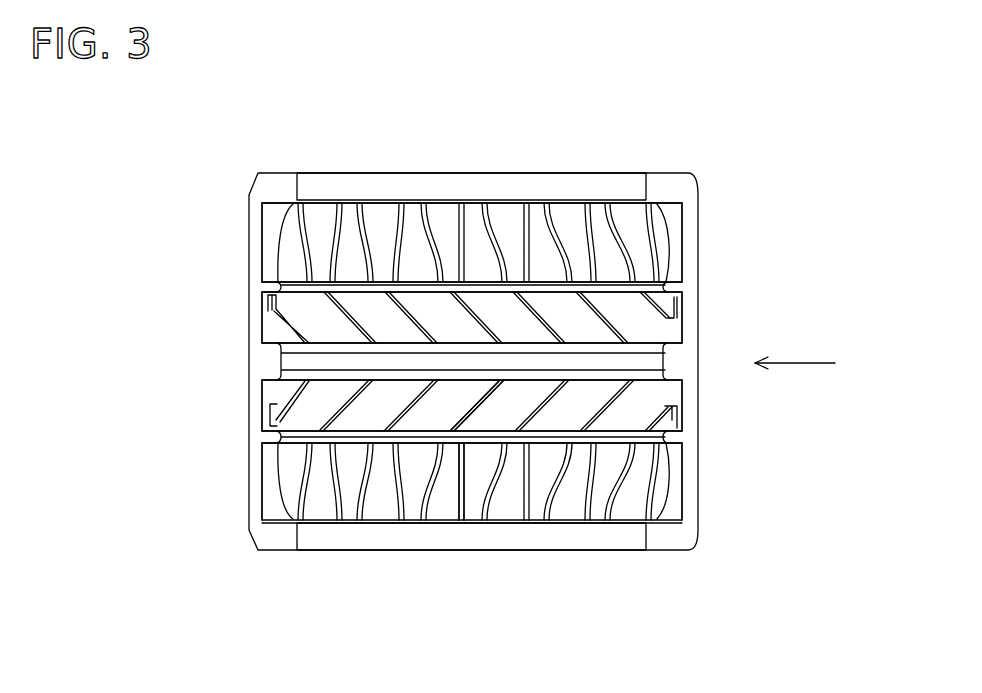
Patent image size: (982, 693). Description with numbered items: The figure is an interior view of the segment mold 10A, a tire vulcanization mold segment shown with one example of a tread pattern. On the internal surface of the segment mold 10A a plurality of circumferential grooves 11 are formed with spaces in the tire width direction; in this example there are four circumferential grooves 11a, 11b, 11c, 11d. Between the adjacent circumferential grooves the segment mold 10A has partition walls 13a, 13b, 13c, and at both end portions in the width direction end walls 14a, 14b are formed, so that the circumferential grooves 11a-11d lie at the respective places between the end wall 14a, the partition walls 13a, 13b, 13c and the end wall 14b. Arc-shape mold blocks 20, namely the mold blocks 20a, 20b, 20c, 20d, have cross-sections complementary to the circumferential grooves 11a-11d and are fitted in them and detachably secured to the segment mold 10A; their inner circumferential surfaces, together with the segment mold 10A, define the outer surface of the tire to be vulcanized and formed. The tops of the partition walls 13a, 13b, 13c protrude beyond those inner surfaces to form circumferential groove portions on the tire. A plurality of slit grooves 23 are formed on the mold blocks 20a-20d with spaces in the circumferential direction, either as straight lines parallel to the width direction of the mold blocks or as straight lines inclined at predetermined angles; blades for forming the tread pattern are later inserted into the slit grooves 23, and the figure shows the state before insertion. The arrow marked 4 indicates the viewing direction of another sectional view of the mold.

The segment mold 10A is at (467, 165).
The circumferential grooves 11 is at (669, 209).
The circumferential groove 11a is at (678, 272).
The circumferential groove 11b is at (682, 323).
The circumferential groove 11c is at (683, 402).
The circumferential groove 11d is at (673, 512).
The partition wall 13a is at (343, 285).
The partition wall 13b is at (298, 373).
The partition wall 13c is at (350, 437).
The end wall 14a is at (590, 180).
The end wall 14b is at (348, 537).
The arc-shape mold blocks 20 is at (287, 232).
The mold block 20a is at (375, 213).
The mold block 20b is at (312, 312).
The mold block 20c is at (298, 413).
The mold block 20d is at (568, 507).
The slit grooves 23 is at (483, 408).
The viewing direction arrow 4 is at (795, 349).